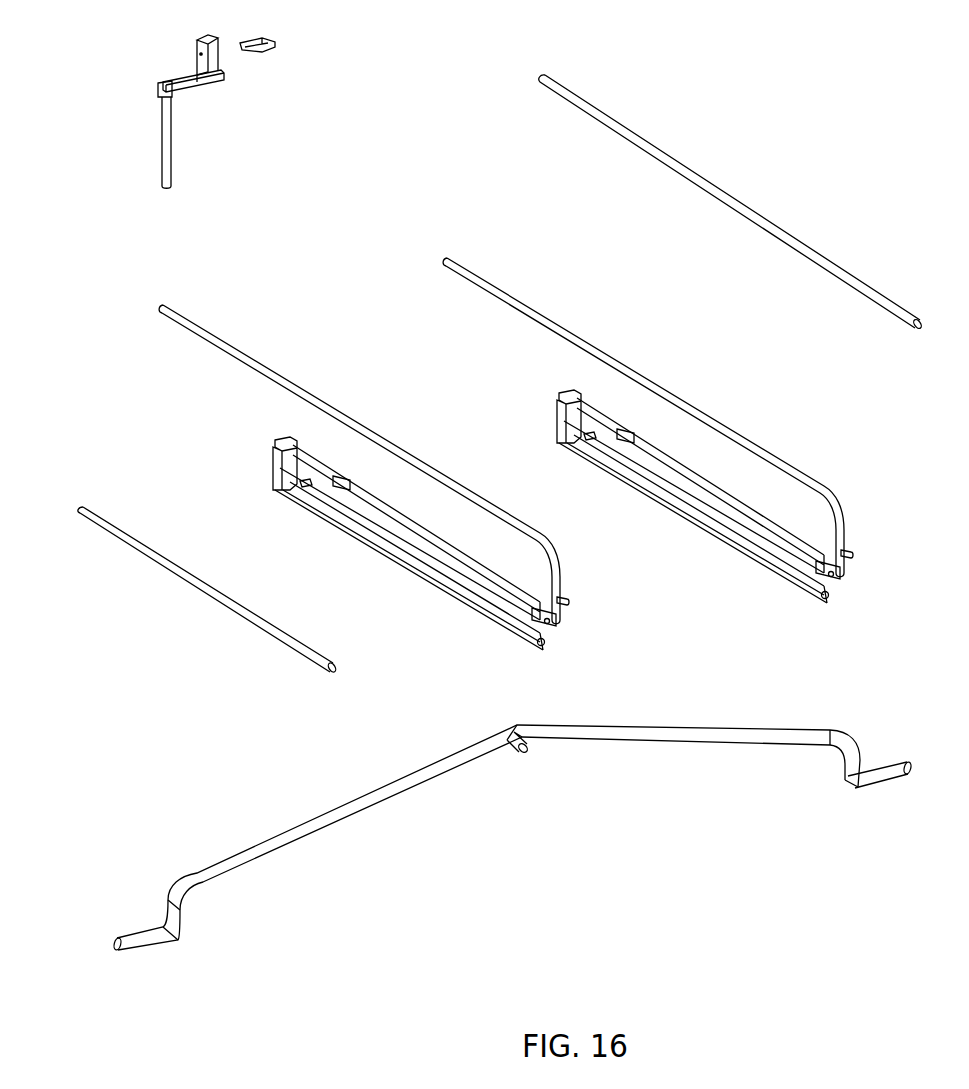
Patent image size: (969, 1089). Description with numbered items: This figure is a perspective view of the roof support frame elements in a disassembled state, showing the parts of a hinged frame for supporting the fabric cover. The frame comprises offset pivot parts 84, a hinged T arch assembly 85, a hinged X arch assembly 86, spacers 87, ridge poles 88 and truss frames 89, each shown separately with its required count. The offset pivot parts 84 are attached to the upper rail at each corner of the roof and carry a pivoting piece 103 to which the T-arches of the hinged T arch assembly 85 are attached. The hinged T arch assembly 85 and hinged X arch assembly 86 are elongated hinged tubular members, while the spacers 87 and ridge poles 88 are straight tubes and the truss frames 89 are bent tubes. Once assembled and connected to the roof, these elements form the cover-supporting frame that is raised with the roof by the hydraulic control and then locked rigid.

The pivoting piece 103 is at (160, 157).
The offset pivot parts 84 is at (193, 112).
The hinged T arch assembly 85 is at (220, 335).
The hinged X arch assembly 86 is at (750, 435).
The spacers 87 is at (737, 190).
The ridge poles 88 is at (277, 640).
The truss frames 89 is at (708, 708).